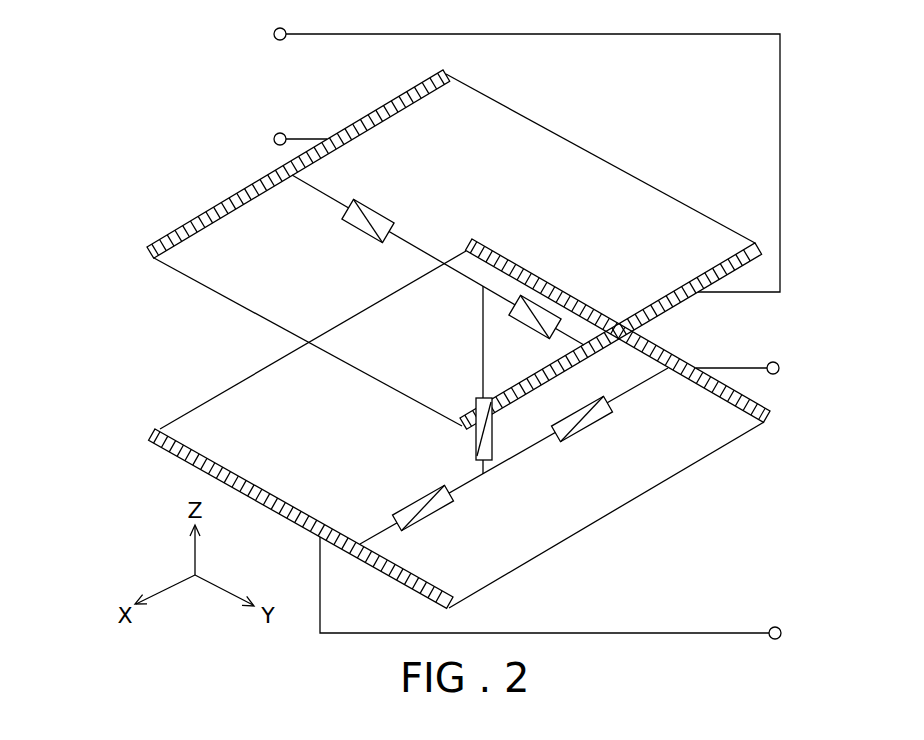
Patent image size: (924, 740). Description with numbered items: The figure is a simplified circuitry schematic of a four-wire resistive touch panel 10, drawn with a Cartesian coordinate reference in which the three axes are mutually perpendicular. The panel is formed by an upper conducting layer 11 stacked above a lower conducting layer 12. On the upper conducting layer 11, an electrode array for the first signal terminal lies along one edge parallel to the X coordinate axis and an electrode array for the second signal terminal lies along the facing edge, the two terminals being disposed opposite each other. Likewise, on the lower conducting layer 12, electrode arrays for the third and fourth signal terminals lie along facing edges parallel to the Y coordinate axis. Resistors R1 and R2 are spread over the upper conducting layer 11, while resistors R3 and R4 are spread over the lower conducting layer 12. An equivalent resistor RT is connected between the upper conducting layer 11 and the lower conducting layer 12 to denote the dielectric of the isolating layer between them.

The touch panel 10 is at (531, 335).
The upper conducting layer 11 is at (688, 214).
The lower conducting layer 12 is at (725, 452).
The resistor R1 is at (373, 211).
The resistor R2 is at (549, 298).
The resistor R3 is at (429, 518).
The resistor R4 is at (592, 437).
The equivalent resistor RT is at (476, 447).